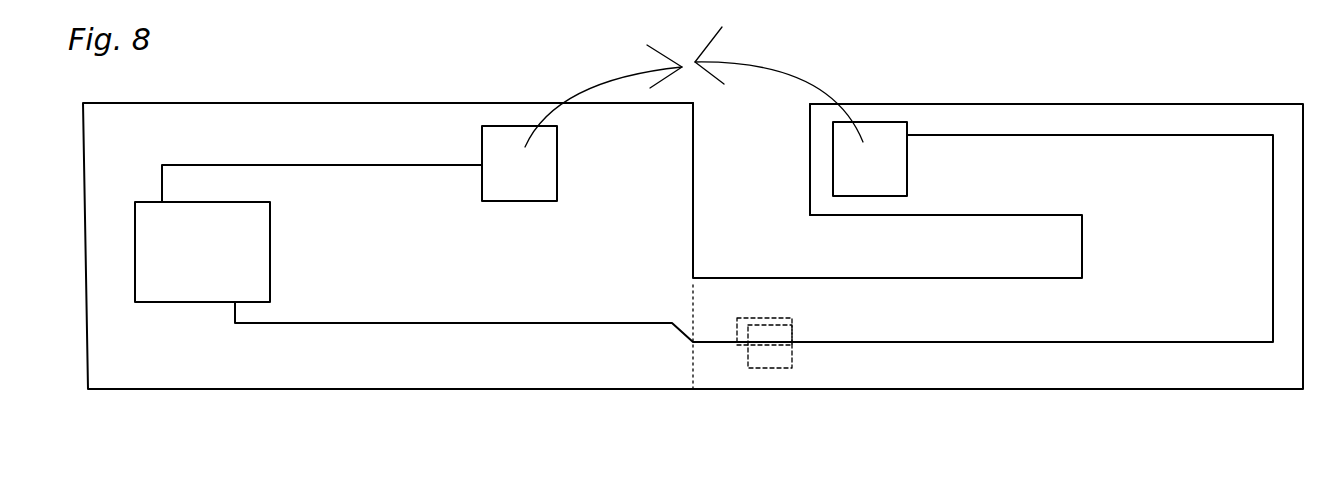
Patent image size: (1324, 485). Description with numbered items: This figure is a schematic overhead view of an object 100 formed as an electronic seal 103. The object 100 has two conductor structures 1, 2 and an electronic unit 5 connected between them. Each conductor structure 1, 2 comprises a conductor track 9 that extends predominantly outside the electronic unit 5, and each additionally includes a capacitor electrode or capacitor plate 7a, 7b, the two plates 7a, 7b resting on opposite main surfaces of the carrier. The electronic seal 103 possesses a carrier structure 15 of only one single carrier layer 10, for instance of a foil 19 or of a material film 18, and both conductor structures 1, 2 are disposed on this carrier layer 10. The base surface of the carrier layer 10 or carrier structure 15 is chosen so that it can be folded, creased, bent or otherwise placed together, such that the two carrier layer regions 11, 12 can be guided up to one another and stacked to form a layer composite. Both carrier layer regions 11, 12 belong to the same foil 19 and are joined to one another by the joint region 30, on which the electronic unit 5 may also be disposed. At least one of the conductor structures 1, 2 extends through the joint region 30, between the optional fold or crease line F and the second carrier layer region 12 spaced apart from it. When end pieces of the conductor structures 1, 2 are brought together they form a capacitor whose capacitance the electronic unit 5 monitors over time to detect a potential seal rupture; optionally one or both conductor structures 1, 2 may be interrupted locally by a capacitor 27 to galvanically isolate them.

The object 100 is at (693, 248).
The electronic seal 103 is at (254, 71).
The carrier layer 10 is at (693, 277).
The carrier structure 15 is at (693, 277).
The material film 18 is at (693, 277).
The foil 19 is at (262, 377).
The conductor structure 1 is at (327, 172).
The conductor structure 2 is at (458, 322).
The conductor track 9 is at (717, 232).
The capacitor plate 7a is at (557, 170).
The capacitor plate 7b is at (907, 172).
The electronic unit 5 is at (262, 263).
The carrier layer region 11 is at (713, 112).
The carrier layer region 12 is at (812, 220).
The capacitor 27 is at (793, 330).
The fold or crease line F is at (703, 411).
The joint region 30 is at (1163, 392).